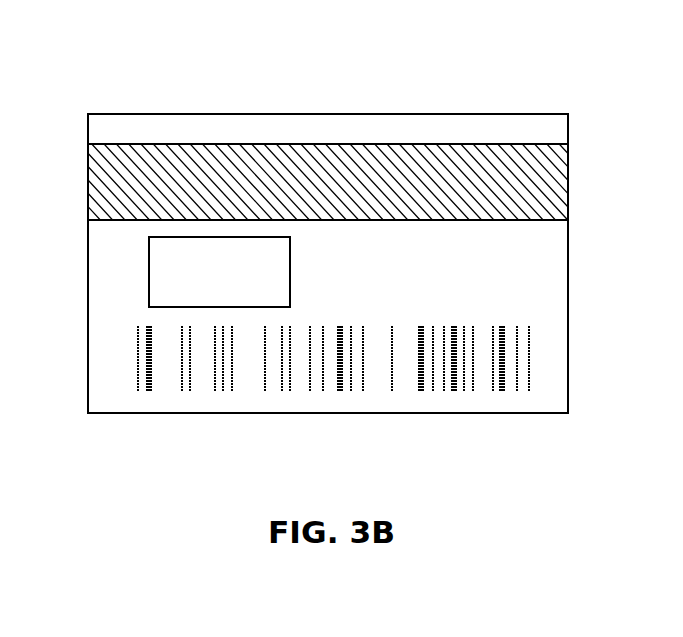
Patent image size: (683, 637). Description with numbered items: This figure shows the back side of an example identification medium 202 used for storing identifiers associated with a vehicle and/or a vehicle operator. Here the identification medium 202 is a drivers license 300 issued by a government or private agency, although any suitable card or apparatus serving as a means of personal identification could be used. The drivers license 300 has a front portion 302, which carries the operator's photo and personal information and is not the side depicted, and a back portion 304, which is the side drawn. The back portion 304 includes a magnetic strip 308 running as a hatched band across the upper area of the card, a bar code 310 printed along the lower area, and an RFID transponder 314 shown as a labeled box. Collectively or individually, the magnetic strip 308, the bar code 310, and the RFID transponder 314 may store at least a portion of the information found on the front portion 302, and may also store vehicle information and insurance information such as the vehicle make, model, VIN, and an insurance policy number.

The identification medium 202 is at (348, 39).
The drivers license 300 is at (431, 98).
The front portion 302 is at (9, 398).
The back portion 304 is at (470, 271).
The magnetic strip 308 is at (247, 178).
The bar code 310 is at (170, 354).
The RFID transponder 314 is at (219, 272).